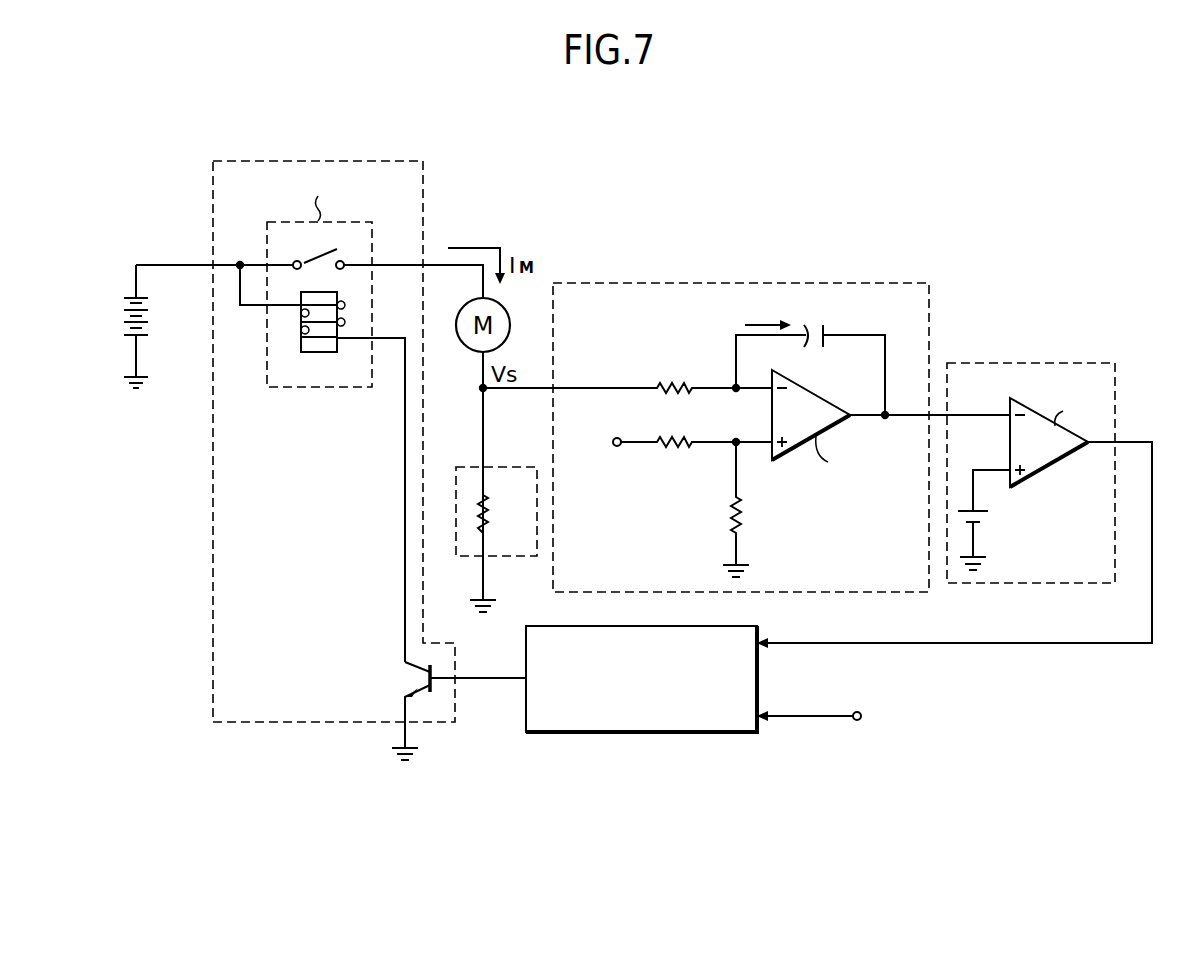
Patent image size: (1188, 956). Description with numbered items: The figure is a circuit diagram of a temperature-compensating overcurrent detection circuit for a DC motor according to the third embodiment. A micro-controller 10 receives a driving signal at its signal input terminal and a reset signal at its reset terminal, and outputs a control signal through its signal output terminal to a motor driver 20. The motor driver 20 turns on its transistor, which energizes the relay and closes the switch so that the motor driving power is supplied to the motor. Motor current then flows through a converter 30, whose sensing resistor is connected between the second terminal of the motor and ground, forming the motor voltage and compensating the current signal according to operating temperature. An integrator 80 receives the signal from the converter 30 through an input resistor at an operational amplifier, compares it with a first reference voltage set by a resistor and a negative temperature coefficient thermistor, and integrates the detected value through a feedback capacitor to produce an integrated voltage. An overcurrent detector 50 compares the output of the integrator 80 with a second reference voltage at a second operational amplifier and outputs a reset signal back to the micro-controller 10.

The micro-controller 10 is at (644, 735).
The motor driver 20 is at (213, 200).
The converter 30 is at (517, 467).
The overcurrent detector 50 is at (1029, 363).
The integrator 80 is at (737, 287).